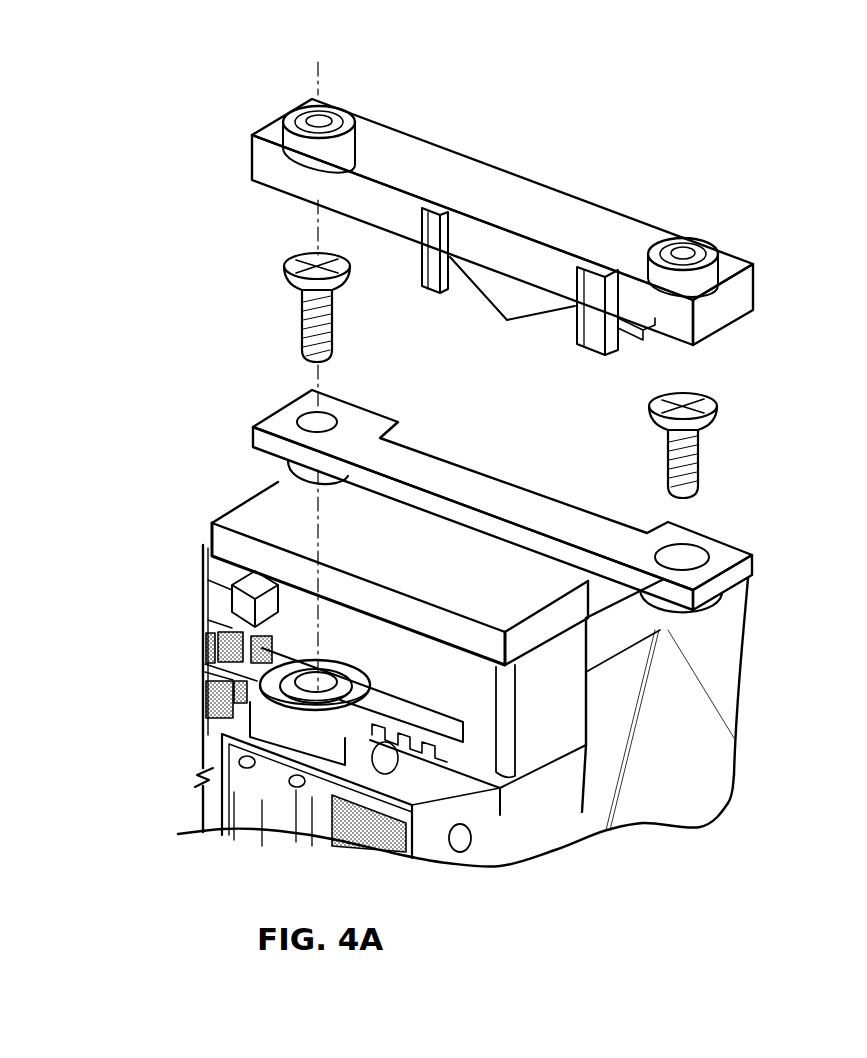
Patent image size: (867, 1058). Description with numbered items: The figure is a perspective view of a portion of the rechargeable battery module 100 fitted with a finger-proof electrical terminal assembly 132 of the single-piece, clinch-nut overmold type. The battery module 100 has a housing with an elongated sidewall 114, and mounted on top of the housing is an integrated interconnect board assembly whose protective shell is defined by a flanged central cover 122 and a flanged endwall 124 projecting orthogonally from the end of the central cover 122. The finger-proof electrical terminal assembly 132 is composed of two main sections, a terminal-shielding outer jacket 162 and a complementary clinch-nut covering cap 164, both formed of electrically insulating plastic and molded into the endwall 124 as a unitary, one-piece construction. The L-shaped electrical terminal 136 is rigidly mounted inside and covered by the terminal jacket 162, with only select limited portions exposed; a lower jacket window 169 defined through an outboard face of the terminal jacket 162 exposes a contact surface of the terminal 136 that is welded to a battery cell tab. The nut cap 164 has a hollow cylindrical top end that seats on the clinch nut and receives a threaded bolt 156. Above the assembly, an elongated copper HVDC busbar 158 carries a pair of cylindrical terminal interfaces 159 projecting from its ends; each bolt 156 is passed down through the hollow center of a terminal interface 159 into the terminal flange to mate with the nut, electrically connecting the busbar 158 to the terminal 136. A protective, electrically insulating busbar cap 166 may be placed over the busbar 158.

The battery module 100 is at (181, 87).
The busbar cap 166 is at (738, 288).
The threaded bolt 156 is at (326, 329).
The HVDC busbar 158 is at (742, 572).
The cylindrical terminal interface 159 is at (273, 465).
The central cover 122 is at (250, 507).
The sidewall 114 is at (718, 672).
The nut cap 164 is at (309, 670).
The finger-proof electrical terminal assembly 132 is at (203, 680).
The terminal jacket 162 is at (228, 740).
The endwall 124 is at (200, 770).
The lower jacket window 169 is at (341, 845).
The electrical terminal 136 is at (374, 846).